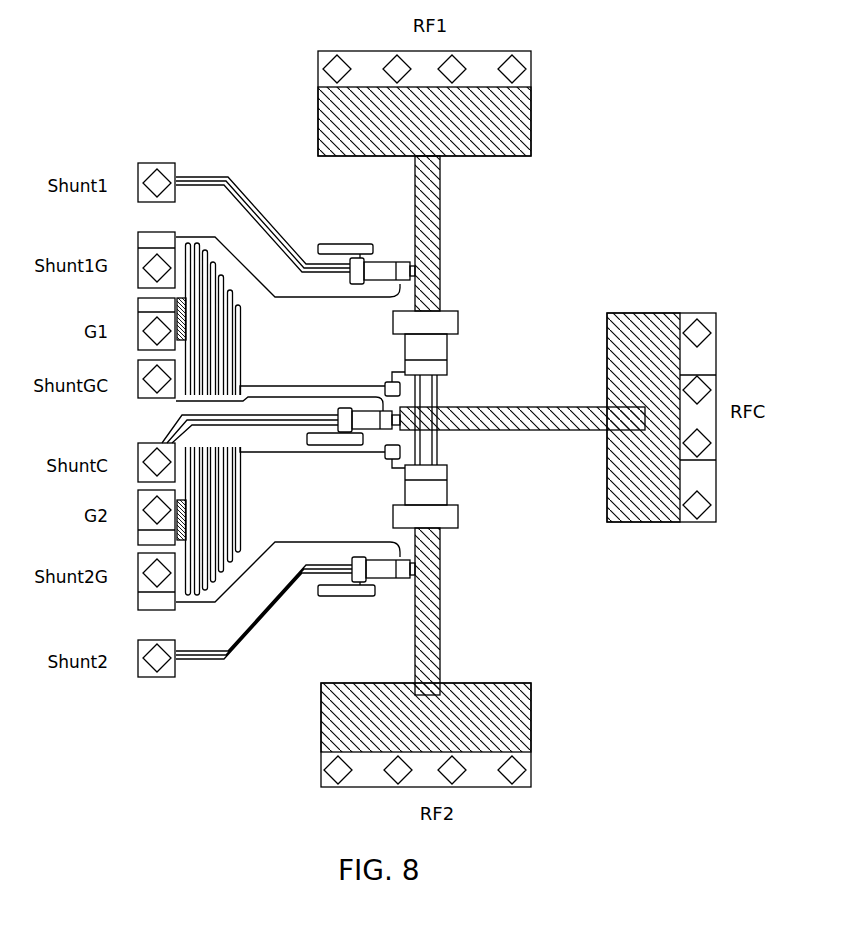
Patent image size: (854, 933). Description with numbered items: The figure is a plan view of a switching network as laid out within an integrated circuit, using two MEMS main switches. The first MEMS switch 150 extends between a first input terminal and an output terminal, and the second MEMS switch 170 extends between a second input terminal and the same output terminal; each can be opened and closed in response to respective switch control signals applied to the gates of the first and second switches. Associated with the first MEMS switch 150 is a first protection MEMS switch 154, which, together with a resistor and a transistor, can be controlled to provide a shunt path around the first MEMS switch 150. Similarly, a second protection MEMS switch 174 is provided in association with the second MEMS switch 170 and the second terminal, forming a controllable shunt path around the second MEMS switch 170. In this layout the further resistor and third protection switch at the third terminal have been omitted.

The first MEMS switch 150 is at (448, 352).
The first protection MEMS switch 154 is at (392, 252).
The second MEMS switch 170 is at (448, 480).
The second protection MEMS switch 174 is at (372, 597).